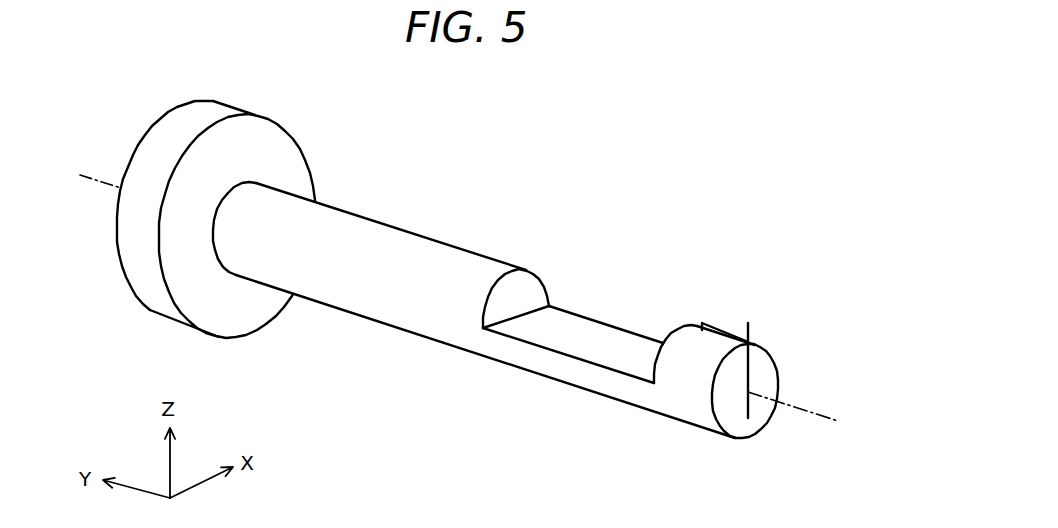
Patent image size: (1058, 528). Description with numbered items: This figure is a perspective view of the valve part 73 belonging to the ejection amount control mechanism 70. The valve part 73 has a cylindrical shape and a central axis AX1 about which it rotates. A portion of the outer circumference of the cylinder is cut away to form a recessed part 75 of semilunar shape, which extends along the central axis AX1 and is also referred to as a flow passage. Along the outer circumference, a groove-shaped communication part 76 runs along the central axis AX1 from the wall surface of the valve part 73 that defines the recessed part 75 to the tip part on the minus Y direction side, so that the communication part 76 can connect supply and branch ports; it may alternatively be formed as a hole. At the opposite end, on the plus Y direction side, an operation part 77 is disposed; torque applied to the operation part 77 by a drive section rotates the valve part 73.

The ejection amount control mechanism 70 is at (477, 259).
The valve part 73 is at (519, 299).
The recessed part 75 is at (622, 289).
The communication part 76 is at (745, 348).
The operation part 77 is at (243, 113).
The central axis AX1 is at (798, 406).